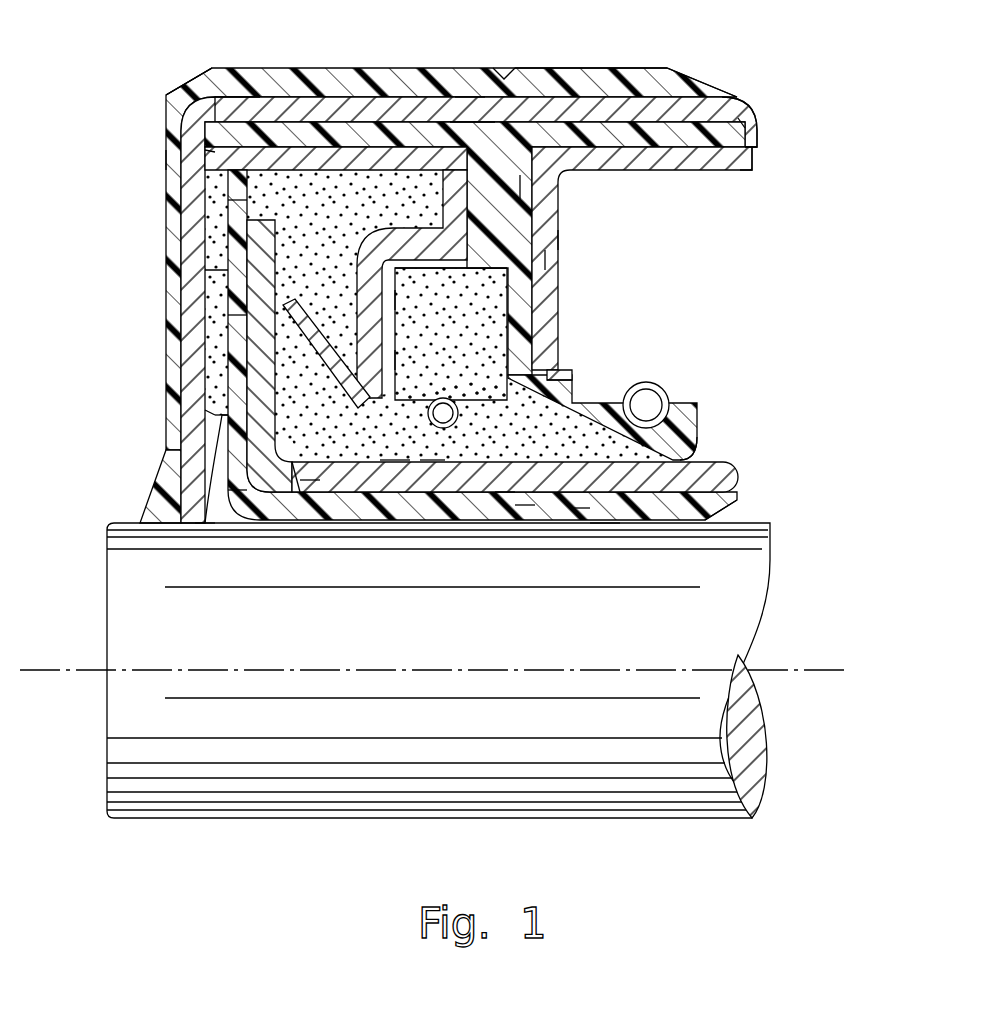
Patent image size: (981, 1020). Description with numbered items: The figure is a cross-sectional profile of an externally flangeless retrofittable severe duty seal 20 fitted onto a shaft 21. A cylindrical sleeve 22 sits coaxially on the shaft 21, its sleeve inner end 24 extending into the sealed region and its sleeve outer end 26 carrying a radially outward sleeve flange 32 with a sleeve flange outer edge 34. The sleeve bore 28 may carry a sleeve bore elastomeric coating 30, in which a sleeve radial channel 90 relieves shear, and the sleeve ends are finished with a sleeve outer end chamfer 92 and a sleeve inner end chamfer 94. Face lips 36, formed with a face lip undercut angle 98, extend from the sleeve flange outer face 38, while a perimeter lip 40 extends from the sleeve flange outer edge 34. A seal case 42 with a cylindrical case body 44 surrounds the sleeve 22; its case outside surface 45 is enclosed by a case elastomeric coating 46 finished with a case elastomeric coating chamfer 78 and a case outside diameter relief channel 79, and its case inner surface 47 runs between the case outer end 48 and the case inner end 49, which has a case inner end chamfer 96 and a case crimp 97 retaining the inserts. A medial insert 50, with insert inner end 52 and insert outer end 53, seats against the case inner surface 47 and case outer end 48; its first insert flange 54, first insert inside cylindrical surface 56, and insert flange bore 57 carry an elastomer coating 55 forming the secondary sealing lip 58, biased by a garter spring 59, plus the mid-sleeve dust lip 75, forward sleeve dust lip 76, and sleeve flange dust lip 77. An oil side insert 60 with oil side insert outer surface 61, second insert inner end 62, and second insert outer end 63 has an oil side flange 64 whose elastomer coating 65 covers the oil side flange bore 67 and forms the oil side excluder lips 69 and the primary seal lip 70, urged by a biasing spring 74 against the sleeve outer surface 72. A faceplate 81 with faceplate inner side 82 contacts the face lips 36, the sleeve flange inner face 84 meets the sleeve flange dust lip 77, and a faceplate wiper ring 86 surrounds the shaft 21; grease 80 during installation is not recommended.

The severe duty seal 20 is at (120, 82).
The shaft 21 is at (405, 815).
The sleeve 22 is at (752, 464).
The sleeve inner end 24 is at (742, 480).
The sleeve outer end 26 is at (205, 490).
The sleeve bore 28 is at (300, 495).
The sleeve bore elastomeric coating 30 is at (605, 528).
The sleeve flange 32 is at (258, 340).
The sleeve flange outer edge 34 is at (245, 205).
The face lips 36 is at (240, 280).
The sleeve flange outer face 38 is at (242, 318).
The perimeter lip 40 is at (297, 170).
The seal case 42 is at (803, 120).
The case body 44 is at (412, 108).
The case outside surface 45 is at (462, 98).
The case elastomeric coating 46 is at (476, 128).
The case inner surface 47 is at (502, 118).
The case outer end 48 is at (246, 172).
The case inner end 49 is at (742, 104).
The medial insert 50 is at (455, 292).
The insert inner end 52 is at (518, 204).
The insert outer end 53 is at (210, 152).
The first insert flange 54 is at (395, 360).
The elastomer coating 55 is at (398, 300).
The first insert inside cylindrical surface 56 is at (455, 240).
The insert flange bore 57 is at (432, 470).
The secondary sealing lip 58 is at (457, 428).
The garter spring 59 is at (505, 495).
The oil side insert 60 is at (668, 242).
The oil side insert outer surface 61 is at (688, 152).
The second insert inner end 62 is at (755, 160).
The second insert outer end 63 is at (560, 372).
The oil side flange 64 is at (548, 258).
The elastomer coating 65 is at (522, 187).
The oil side flange bore 67 is at (558, 380).
The oil side excluder lips 69 is at (578, 508).
The primary seal lip 70 is at (700, 426).
The sleeve outer surface 72 is at (705, 450).
The biasing spring 74 is at (670, 406).
The mid-sleeve dust lip 75 is at (395, 470).
The forward sleeve dust lip 76 is at (350, 470).
The sleeve flange dust lip 77 is at (305, 492).
The case elastomeric coating chamfer 78 is at (190, 74).
The case outside diameter relief channel 79 is at (520, 70).
The grease 80 is at (410, 175).
The faceplate 81 is at (165, 160).
The faceplate inner side 82 is at (203, 183).
The sleeve flange inner face 84 is at (285, 270).
The faceplate wiper ring 86 is at (167, 490).
The sleeve radial channel 90 is at (525, 505).
The sleeve outer end chamfer 92 is at (250, 497).
The sleeve inner end chamfer 94 is at (715, 508).
The case inner end chamfer 96 is at (742, 125).
The case crimp 97 is at (757, 146).
The face lip undercut angle 98 is at (218, 420).